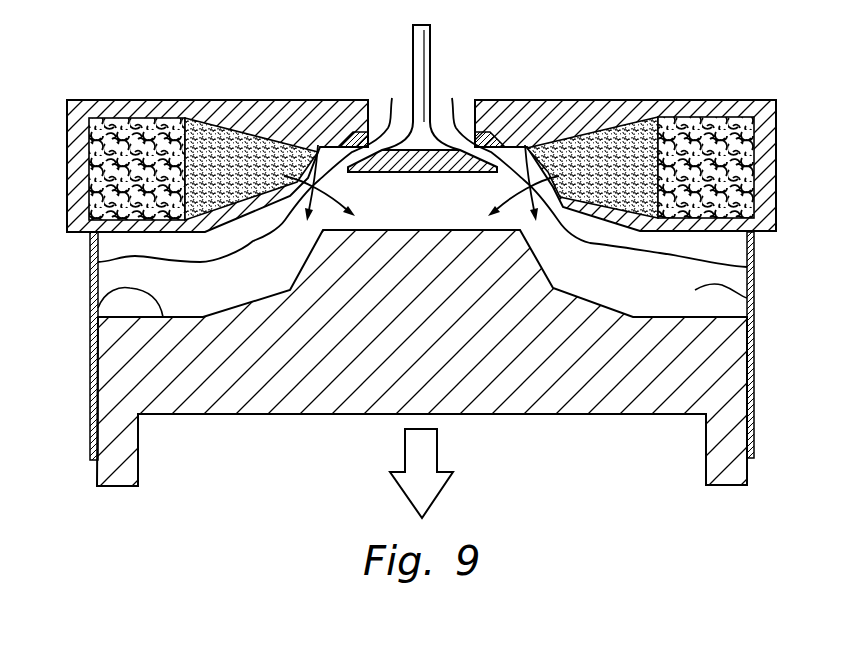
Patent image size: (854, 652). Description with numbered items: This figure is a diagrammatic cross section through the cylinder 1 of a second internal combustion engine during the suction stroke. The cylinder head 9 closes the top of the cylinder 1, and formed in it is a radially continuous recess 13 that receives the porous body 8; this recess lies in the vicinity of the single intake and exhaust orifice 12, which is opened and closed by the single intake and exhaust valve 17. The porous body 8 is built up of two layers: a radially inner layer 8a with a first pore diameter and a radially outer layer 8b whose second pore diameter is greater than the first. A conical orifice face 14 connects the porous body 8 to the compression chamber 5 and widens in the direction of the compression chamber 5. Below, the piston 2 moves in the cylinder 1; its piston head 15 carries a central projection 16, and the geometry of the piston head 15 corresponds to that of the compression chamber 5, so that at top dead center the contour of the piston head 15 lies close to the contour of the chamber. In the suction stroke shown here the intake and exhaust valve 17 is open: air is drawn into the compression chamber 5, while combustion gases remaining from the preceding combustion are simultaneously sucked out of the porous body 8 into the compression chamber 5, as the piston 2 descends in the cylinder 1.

The cylinder 1 is at (754, 417).
The piston 2 is at (732, 353).
The compression chamber 5 is at (754, 298).
The porous body 8 is at (666, 104).
The radially inner layer 8a is at (603, 128).
The radially outer layer 8b is at (708, 153).
The cylinder head 9 is at (212, 100).
The intake and exhaust orifice 12 is at (367, 100).
The radially continuous recess 13 is at (535, 148).
The conical orifice face 14 is at (98, 262).
The piston head 15 is at (90, 308).
The central projection 16 is at (755, 267).
The intake and exhaust valve 17 is at (432, 50).